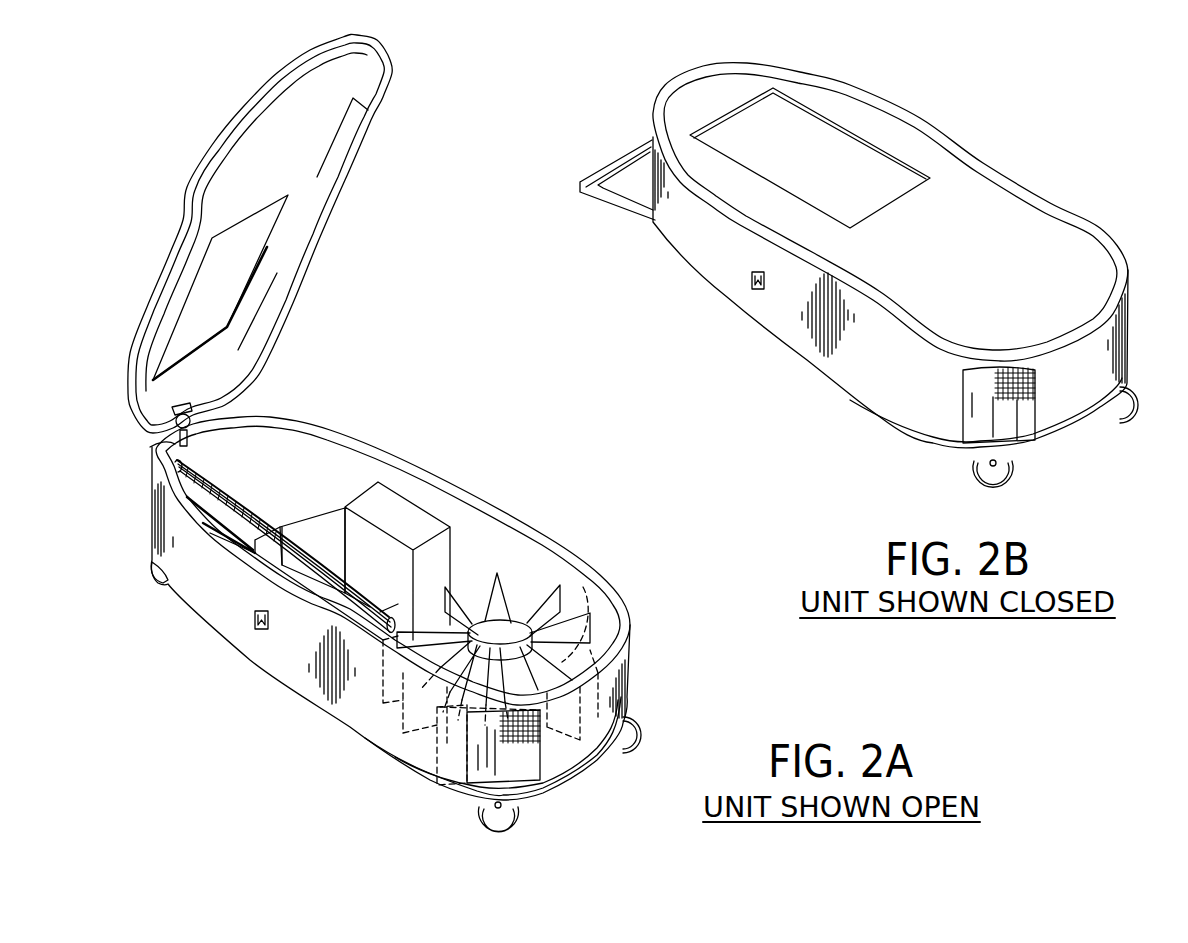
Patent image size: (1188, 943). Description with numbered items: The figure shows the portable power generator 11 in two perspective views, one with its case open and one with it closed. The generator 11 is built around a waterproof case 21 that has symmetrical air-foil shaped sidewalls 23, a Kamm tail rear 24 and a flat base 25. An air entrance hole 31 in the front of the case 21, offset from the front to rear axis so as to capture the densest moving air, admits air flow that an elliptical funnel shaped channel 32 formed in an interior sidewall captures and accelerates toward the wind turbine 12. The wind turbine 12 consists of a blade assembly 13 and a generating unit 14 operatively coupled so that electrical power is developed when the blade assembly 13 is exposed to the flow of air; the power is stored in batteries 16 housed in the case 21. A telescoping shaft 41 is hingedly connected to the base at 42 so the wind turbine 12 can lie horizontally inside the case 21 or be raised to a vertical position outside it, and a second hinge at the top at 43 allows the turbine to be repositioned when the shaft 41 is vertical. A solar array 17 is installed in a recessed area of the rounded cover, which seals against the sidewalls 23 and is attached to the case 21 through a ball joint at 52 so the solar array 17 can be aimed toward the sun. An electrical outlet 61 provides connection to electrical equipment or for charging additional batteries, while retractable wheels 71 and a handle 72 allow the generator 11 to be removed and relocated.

In FIG. 2A, the portable power generator 11 is at (445, 353).
In FIG. 2B, the portable power generator 11 is at (1028, 100).
In FIG. 2A, the wind turbine 12 is at (600, 615).
In FIG. 2A, the blade assembly 13 is at (555, 612).
In FIG. 2A, the generating unit 14 is at (500, 635).
In FIG. 2A, the batteries 16 is at (373, 497).
In FIG. 2A, the solar array 17 is at (222, 265).
In FIG. 2B, the solar array 17 is at (857, 160).
In FIG. 2A, the waterproof case 21 is at (566, 540).
In FIG. 2B, the waterproof case 21 is at (824, 386).
In FIG. 2A, the sidewalls 23 is at (437, 487).
In FIG. 2A, the Kamm tail rear 24 is at (158, 515).
In FIG. 2B, the Kamm tail rear 24 is at (653, 140).
In FIG. 2A, the flat base 25 is at (307, 700).
In FIG. 2B, the flat base 25 is at (783, 347).
In FIG. 2A, the air entrance hole 31 is at (540, 743).
In FIG. 2B, the air entrance hole 31 is at (1037, 413).
In FIG. 2A, the funnel shaped channel 32 is at (477, 752).
In FIG. 2B, the funnel shaped channel 32 is at (980, 410).
In FIG. 2A, the telescoping shaft 41 is at (287, 563).
In FIG. 2A, the hinge connection to base 42 is at (157, 453).
In FIG. 2A, the top hinge 43 is at (403, 627).
In FIG. 2A, the ball joint 52 is at (200, 418).
In FIG. 2A, the electrical outlet 61 is at (243, 617).
In FIG. 2B, the electrical outlet 61 is at (748, 280).
In FIG. 2A, the retractable wheels 71 is at (482, 818).
In FIG. 2B, the retractable wheels 71 is at (987, 473).
In FIG. 2A, the handle 72 is at (151, 573).
In FIG. 2B, the handle 72 is at (620, 210).